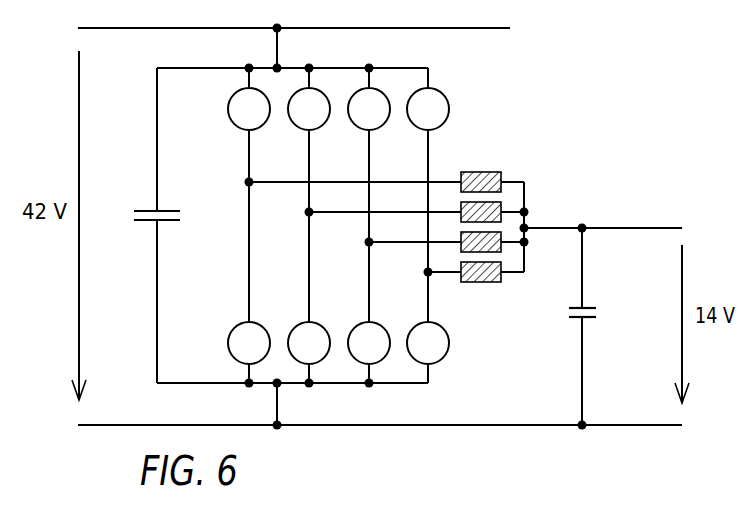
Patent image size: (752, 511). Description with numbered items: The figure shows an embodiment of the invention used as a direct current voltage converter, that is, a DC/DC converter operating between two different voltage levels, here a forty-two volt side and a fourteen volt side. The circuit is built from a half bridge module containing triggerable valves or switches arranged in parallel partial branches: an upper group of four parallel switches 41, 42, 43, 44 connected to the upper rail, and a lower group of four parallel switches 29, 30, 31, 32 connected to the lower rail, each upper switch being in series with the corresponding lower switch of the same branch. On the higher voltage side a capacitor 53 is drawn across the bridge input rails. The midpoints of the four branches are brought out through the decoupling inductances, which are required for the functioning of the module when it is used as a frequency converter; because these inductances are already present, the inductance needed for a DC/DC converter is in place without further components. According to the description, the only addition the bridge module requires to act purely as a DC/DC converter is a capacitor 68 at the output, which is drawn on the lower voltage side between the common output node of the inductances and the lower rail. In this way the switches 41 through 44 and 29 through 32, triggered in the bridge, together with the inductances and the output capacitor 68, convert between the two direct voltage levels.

The parallel valve or switch 29 is at (236, 340).
The parallel valve or switch 30 is at (300, 338).
The parallel valve or switch 31 is at (360, 340).
The parallel valve or switch 32 is at (418, 336).
The parallel valve or switch 41 is at (238, 118).
The parallel valve or switch 42 is at (298, 118).
The parallel valve or switch 43 is at (358, 118).
The parallel valve or switch 44 is at (417, 118).
The capacitor (42 V side) 53 is at (159, 222).
The capacitor 68 is at (586, 318).